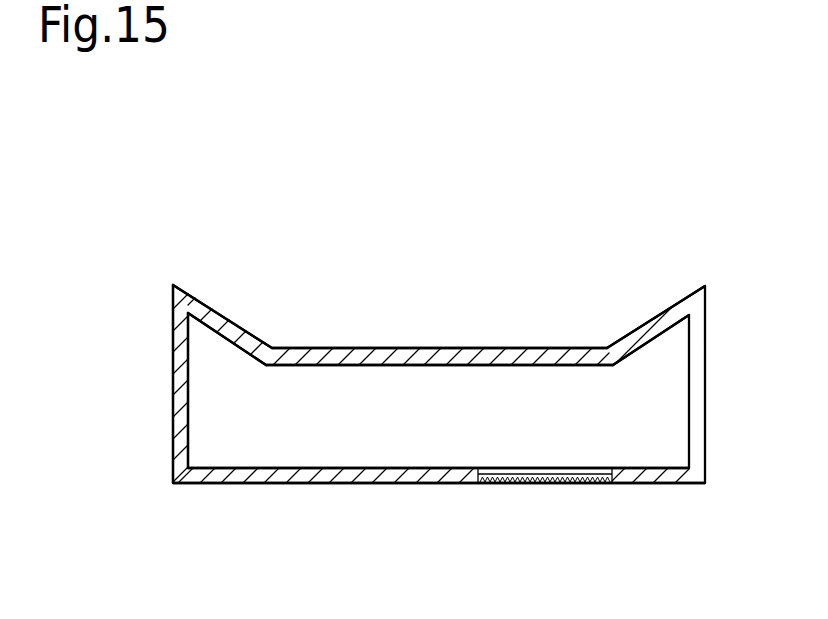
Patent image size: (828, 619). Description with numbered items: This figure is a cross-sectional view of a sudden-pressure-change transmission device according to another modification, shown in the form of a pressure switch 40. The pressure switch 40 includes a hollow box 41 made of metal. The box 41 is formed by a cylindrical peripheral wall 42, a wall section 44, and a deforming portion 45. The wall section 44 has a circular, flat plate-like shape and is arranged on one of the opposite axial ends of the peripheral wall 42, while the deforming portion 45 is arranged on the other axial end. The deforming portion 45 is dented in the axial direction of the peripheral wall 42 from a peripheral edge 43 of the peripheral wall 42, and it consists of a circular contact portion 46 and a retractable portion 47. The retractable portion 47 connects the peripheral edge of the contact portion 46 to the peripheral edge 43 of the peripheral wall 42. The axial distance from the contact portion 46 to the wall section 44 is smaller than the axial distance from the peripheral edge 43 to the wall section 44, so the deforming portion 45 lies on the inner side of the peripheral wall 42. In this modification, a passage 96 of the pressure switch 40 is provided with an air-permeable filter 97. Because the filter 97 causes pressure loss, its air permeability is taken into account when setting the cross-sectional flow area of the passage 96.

The pressure switch 40 is at (162, 306).
The box 41 is at (173, 400).
The peripheral wall 42 is at (173, 438).
The peripheral edge 43 is at (688, 316).
The wall section 44 is at (450, 485).
The deforming portion 45 is at (393, 294).
The contact portion 46 is at (320, 357).
The retractable portion 47 is at (226, 327).
The passage 96 is at (492, 468).
The filter 97 is at (563, 484).